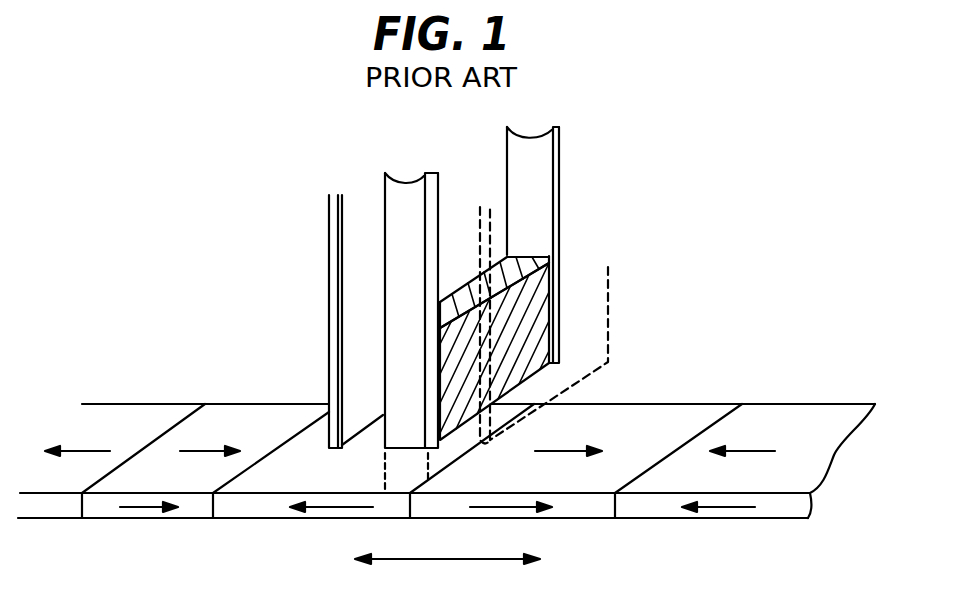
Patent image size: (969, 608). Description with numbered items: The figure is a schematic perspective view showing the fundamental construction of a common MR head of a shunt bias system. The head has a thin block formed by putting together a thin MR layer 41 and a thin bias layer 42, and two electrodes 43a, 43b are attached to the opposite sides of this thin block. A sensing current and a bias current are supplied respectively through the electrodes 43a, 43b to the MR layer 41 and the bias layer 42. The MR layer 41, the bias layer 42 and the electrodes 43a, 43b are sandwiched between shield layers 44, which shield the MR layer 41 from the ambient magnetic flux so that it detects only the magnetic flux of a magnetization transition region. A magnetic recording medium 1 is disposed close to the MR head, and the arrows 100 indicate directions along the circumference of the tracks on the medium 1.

The magnetic recording medium 1 is at (785, 404).
The MR layer 41 is at (540, 256).
The bias layer 42 is at (513, 256).
The electrode 43a is at (405, 180).
The electrode 43b is at (559, 153).
The shield layer 44 is at (329, 287).
The arrows 100 is at (472, 560).